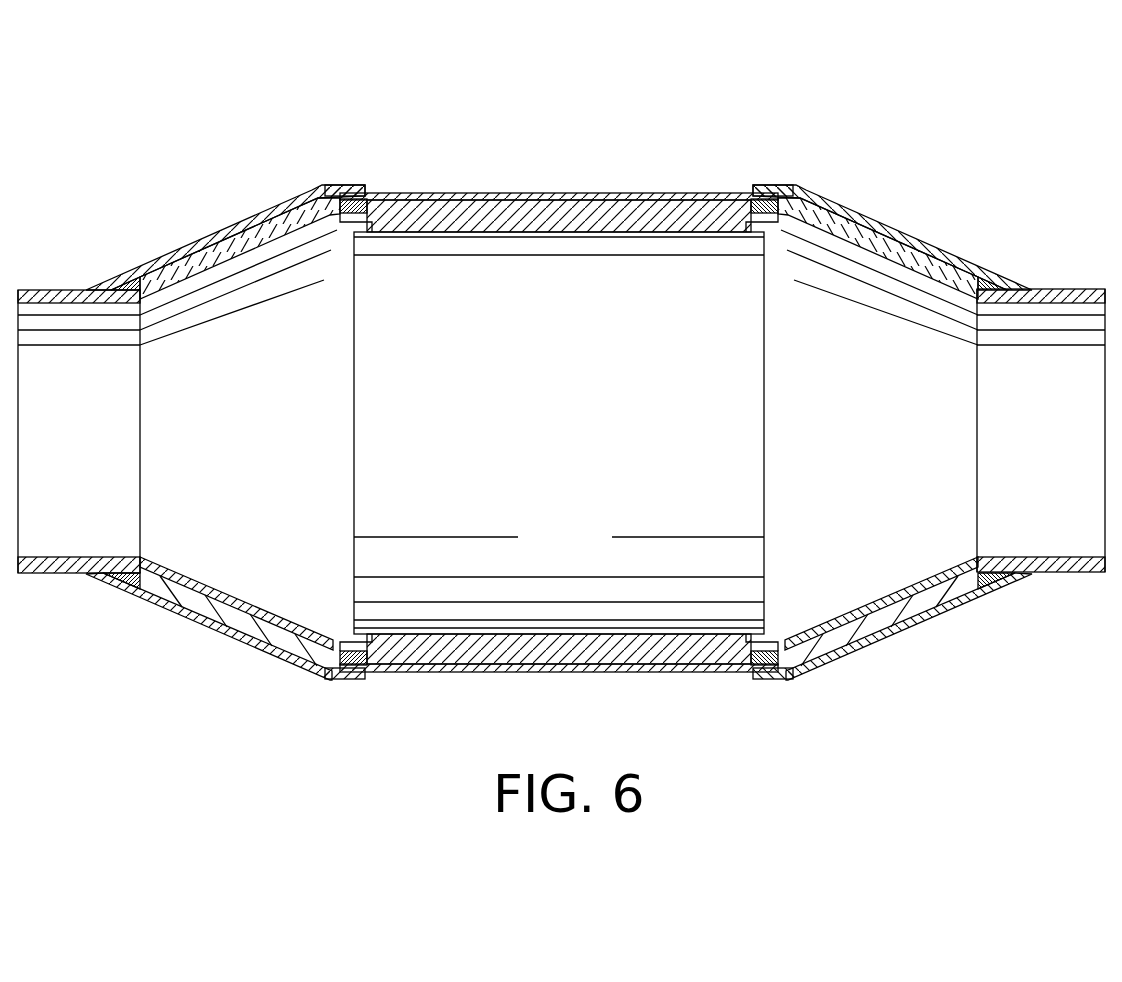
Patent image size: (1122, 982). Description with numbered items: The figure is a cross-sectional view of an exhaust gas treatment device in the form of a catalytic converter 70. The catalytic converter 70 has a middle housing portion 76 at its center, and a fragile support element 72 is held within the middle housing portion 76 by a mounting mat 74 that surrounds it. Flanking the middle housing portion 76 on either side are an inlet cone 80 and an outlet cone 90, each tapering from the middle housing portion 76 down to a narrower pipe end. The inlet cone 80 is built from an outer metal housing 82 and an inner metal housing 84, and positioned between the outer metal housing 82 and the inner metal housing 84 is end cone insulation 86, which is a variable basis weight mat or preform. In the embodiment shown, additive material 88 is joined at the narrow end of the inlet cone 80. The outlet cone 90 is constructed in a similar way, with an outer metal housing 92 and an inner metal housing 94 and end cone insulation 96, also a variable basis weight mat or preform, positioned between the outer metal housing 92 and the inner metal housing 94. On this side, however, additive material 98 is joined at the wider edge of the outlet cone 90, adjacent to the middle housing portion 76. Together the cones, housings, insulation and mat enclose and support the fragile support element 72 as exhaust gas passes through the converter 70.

The catalytic converter 70 is at (561, 428).
The fragile support element 72 is at (567, 425).
The mounting mat 74 is at (534, 195).
The middle housing portion 76 is at (474, 192).
The inlet cone 80 is at (197, 401).
The outer metal housing 82 is at (306, 190).
The inner metal housing 84 is at (242, 264).
The end cone insulation 86 is at (260, 235).
The additive material 88 is at (113, 290).
The outlet cone 90 is at (882, 426).
The outer metal housing 92 is at (805, 190).
The inner metal housing 94 is at (878, 260).
The end cone insulation 96 is at (860, 230).
The additive material 98 is at (765, 190).